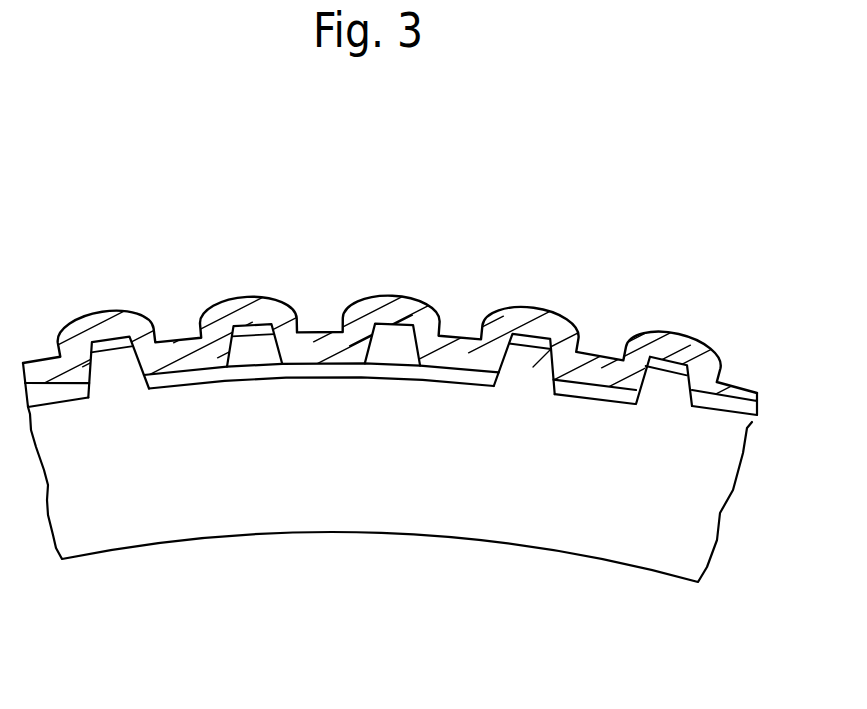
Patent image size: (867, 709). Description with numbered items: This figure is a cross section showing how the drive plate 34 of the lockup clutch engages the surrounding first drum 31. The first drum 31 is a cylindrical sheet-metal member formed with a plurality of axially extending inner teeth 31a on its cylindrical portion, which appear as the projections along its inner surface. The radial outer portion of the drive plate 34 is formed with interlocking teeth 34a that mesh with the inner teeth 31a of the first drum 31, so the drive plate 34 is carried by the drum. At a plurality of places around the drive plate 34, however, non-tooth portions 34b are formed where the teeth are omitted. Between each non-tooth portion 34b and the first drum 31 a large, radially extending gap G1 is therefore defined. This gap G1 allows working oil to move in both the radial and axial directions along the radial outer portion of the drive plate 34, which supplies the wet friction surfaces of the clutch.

The drive plate 34 is at (362, 533).
The interlocking teeth 34a is at (455, 363).
The non-tooth portion 34b is at (250, 377).
The first drum 31 is at (537, 305).
The inner teeth 31a is at (322, 348).
The gap G1 is at (343, 362).